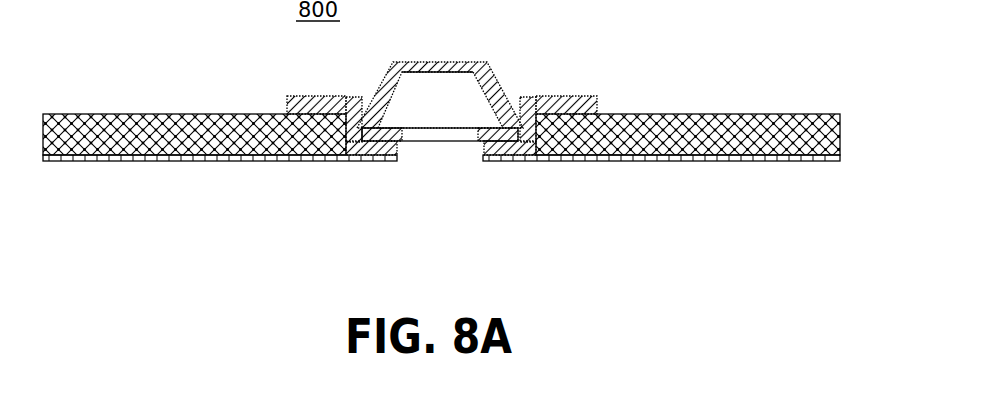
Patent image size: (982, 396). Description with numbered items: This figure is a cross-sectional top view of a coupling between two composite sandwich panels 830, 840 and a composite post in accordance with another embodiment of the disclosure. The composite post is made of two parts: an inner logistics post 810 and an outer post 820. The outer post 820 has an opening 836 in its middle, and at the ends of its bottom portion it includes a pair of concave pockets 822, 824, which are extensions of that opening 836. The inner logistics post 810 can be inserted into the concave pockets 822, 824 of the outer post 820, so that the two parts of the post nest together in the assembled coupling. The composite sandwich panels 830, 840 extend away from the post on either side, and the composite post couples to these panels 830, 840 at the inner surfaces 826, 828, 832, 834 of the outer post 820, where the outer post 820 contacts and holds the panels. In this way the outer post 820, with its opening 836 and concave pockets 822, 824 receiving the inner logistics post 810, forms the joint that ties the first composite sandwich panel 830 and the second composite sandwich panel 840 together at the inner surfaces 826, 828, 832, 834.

The inner logistics post 810 is at (410, 143).
The outer post 820 is at (496, 80).
The concave pocket 822 is at (514, 120).
The concave pocket 824 is at (357, 122).
The inner surface 826 is at (285, 104).
The inner surface 828 is at (585, 107).
The composite sandwich panel 830 is at (96, 160).
The inner surface 832 is at (357, 159).
The inner surface 834 is at (512, 159).
The opening 836 is at (423, 93).
The composite sandwich panel 840 is at (788, 162).